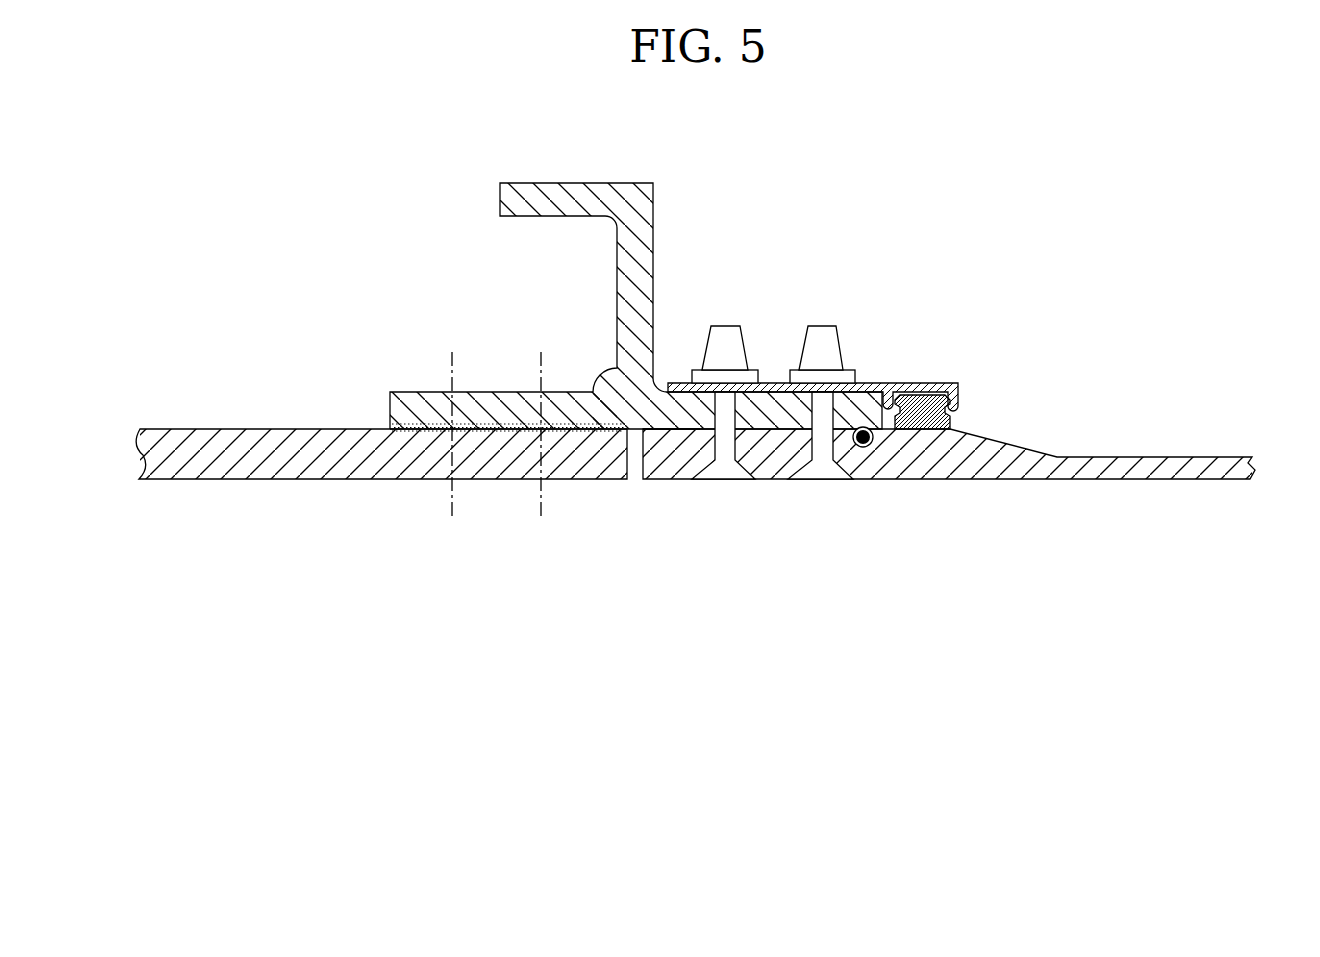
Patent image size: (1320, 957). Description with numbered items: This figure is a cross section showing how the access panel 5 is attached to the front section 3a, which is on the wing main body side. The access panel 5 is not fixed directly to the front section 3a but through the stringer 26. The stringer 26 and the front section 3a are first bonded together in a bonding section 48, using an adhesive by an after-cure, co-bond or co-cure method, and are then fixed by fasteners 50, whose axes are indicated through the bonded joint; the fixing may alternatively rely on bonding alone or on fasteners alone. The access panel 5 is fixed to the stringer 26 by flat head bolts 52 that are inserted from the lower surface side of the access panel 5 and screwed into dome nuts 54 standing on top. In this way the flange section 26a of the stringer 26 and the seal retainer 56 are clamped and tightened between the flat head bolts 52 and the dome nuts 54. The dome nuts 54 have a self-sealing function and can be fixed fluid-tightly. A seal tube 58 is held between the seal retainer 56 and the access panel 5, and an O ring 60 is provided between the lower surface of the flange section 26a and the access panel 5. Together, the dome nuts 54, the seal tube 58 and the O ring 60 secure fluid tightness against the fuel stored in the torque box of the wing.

The front section 3a is at (347, 481).
The access panel 5 is at (972, 481).
The stringer 26 is at (653, 211).
The flange section 26a is at (665, 431).
The bonding section 48 is at (410, 402).
The fasteners 50 is at (455, 356).
The flat head bolts 52 is at (728, 481).
The dome nuts 54 is at (727, 326).
The seal retainer 56 is at (893, 383).
The seal tube 58 is at (955, 416).
The O ring 60 is at (868, 448).